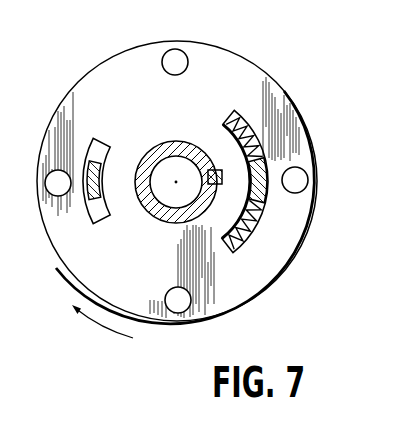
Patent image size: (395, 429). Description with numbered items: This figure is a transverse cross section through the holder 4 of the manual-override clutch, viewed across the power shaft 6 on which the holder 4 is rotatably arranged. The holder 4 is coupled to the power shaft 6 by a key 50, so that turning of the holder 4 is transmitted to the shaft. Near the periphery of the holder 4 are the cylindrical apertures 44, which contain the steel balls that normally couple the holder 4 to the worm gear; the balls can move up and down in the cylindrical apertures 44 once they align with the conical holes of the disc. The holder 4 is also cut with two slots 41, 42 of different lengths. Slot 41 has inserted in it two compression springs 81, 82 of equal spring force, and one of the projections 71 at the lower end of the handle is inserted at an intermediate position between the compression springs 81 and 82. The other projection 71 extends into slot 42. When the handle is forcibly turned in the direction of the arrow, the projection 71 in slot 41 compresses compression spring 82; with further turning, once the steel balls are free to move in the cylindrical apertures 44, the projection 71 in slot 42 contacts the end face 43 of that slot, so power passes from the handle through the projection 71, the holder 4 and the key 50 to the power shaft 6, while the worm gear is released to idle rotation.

The holder 4 is at (93, 66).
The power shaft 6 is at (188, 143).
The slot 41 is at (258, 137).
The slot 42 is at (103, 153).
The end face 43 is at (105, 136).
The cylindrical apertures 44 is at (182, 58).
The key 50 is at (222, 178).
The projections 71 is at (266, 198).
The compression spring 81 is at (247, 115).
The compression spring 82 is at (240, 250).